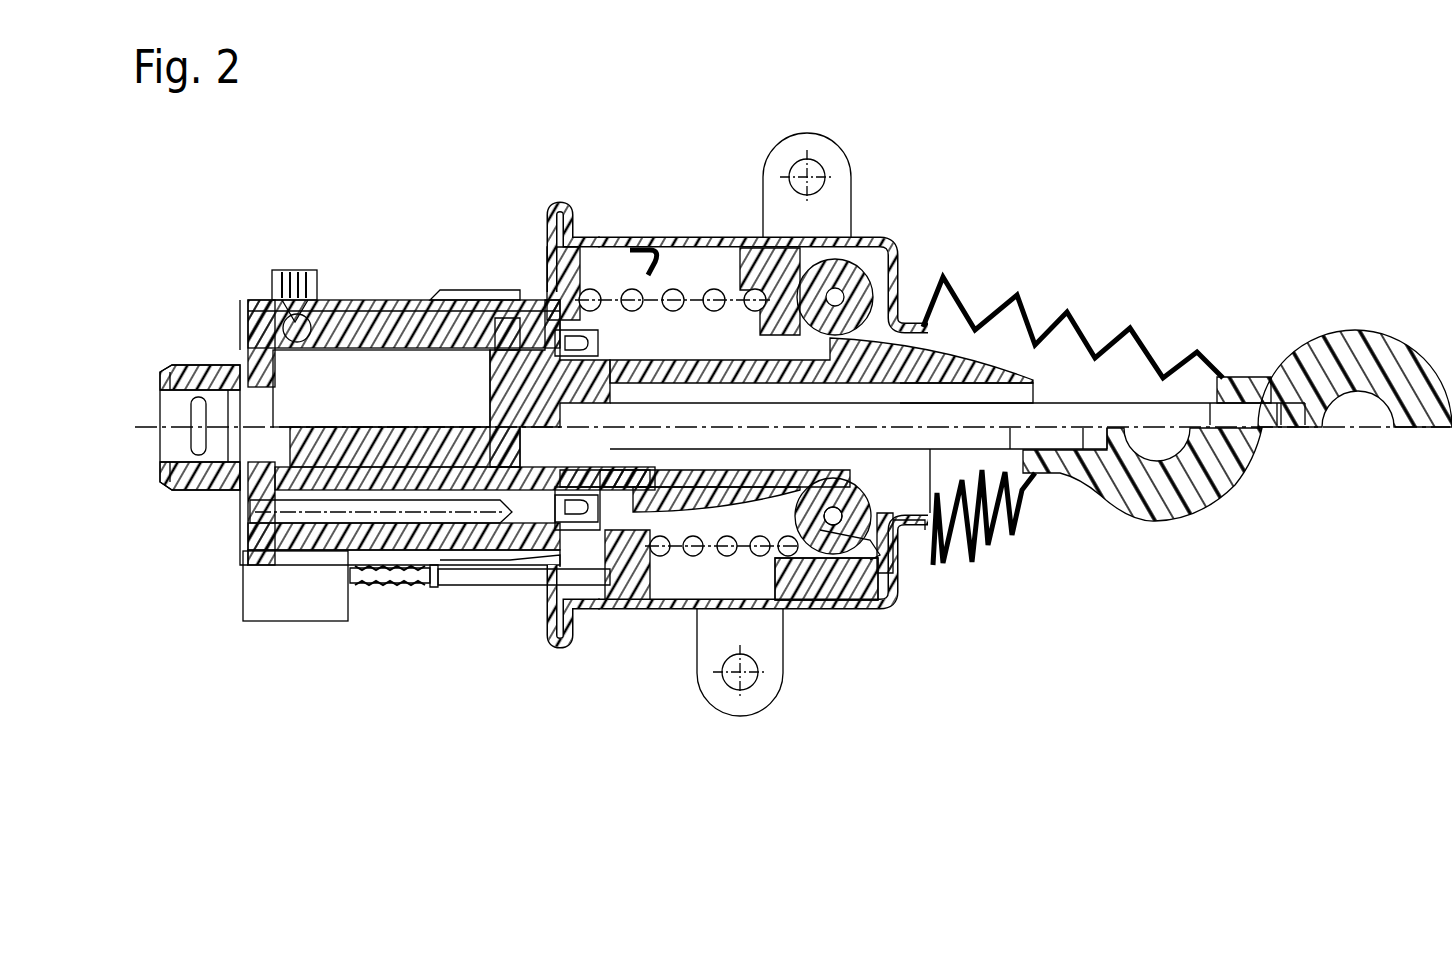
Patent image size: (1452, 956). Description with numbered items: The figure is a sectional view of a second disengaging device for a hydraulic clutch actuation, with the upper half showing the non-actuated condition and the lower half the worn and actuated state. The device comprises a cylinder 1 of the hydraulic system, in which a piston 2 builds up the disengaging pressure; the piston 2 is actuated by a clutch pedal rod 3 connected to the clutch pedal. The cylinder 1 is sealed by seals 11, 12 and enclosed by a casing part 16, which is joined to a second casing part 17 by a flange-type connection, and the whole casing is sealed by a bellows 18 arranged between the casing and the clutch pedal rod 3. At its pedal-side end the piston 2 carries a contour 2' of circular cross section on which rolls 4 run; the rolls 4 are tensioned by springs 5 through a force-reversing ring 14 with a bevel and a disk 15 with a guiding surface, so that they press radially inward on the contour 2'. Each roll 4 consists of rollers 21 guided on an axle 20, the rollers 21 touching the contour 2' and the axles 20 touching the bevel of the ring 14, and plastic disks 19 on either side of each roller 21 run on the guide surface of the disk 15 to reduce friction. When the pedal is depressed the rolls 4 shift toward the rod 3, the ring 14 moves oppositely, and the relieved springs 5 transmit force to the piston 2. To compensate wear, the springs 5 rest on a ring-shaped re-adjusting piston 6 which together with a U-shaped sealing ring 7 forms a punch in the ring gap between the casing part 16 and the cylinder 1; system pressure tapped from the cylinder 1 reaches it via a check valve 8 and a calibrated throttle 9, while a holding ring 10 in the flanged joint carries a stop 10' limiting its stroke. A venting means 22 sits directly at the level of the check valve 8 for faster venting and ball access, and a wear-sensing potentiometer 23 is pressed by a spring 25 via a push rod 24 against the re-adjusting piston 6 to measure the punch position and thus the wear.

The cylinder 1 is at (210, 476).
The piston 2 is at (441, 316).
The contour 2' is at (796, 330).
The clutch pedal rod 3 is at (1175, 488).
The rolls 4 is at (850, 272).
The springs 5 is at (717, 300).
The re-adjusting piston 6 is at (570, 272).
The sealing ring 7 is at (478, 290).
The check valve 8 is at (342, 300).
The calibrated throttle 9 is at (375, 296).
The holding ring 10 is at (691, 608).
The stop 10' is at (672, 211).
The seal 11 is at (337, 493).
The seal 12 is at (583, 512).
The force-reversing ring 14 is at (827, 595).
The disk 15 is at (883, 565).
The casing part 16 is at (507, 285).
The casing part 17 is at (692, 238).
The bellows 18 is at (1000, 300).
The plastic disks 19 is at (843, 550).
The axle 20 is at (860, 545).
The rollers 21 is at (837, 518).
The venting means 22 is at (300, 270).
The wear sensing unit 23 is at (312, 618).
The push rod 24 is at (463, 578).
The spring 25 is at (410, 578).